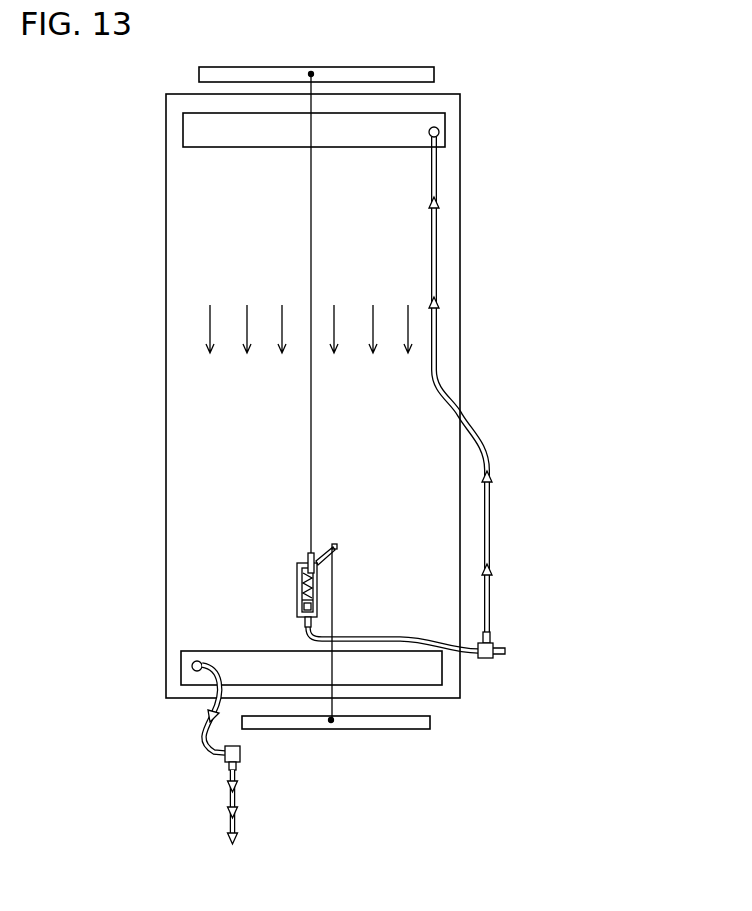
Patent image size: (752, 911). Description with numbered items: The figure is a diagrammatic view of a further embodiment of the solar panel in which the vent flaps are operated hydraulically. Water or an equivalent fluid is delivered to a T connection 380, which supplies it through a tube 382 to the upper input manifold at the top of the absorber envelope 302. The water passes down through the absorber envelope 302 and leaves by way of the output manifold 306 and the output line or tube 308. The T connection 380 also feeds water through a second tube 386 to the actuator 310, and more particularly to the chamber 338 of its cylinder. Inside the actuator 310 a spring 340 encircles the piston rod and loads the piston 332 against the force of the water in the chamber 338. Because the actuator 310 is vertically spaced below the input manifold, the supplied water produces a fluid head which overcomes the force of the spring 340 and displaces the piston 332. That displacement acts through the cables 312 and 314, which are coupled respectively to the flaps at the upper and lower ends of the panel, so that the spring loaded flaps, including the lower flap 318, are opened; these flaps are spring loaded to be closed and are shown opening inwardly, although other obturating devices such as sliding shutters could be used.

The absorber envelope 302 is at (166, 277).
The output manifold 306 is at (200, 682).
The flap 318 is at (432, 723).
The cable 314 is at (311, 386).
The tube 382 is at (490, 440).
The T connection 380 is at (491, 642).
The tube 386 is at (417, 636).
The actuator 310 is at (298, 582).
The spring 340 is at (305, 568).
The piston 332 is at (306, 606).
The chamber 338 is at (313, 607).
The cable 312 is at (335, 587).
The tube 308 is at (206, 749).